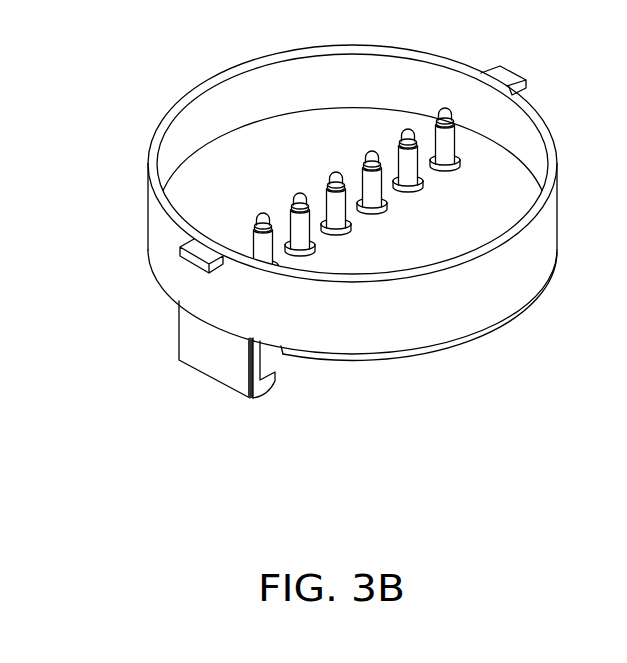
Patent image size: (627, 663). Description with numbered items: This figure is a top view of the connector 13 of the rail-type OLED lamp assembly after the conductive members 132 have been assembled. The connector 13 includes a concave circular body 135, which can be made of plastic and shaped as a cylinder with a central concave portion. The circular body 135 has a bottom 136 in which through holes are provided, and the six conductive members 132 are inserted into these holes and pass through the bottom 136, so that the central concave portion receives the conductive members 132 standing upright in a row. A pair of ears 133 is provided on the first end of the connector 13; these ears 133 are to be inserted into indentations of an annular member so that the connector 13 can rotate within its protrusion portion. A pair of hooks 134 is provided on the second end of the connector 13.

The connector 13 is at (188, 38).
The conductive members 132 is at (445, 142).
The pair of ears 133 is at (204, 252).
The pair of hooks 134 is at (193, 333).
The concave circular body 135 is at (498, 290).
The bottom 136 is at (392, 252).